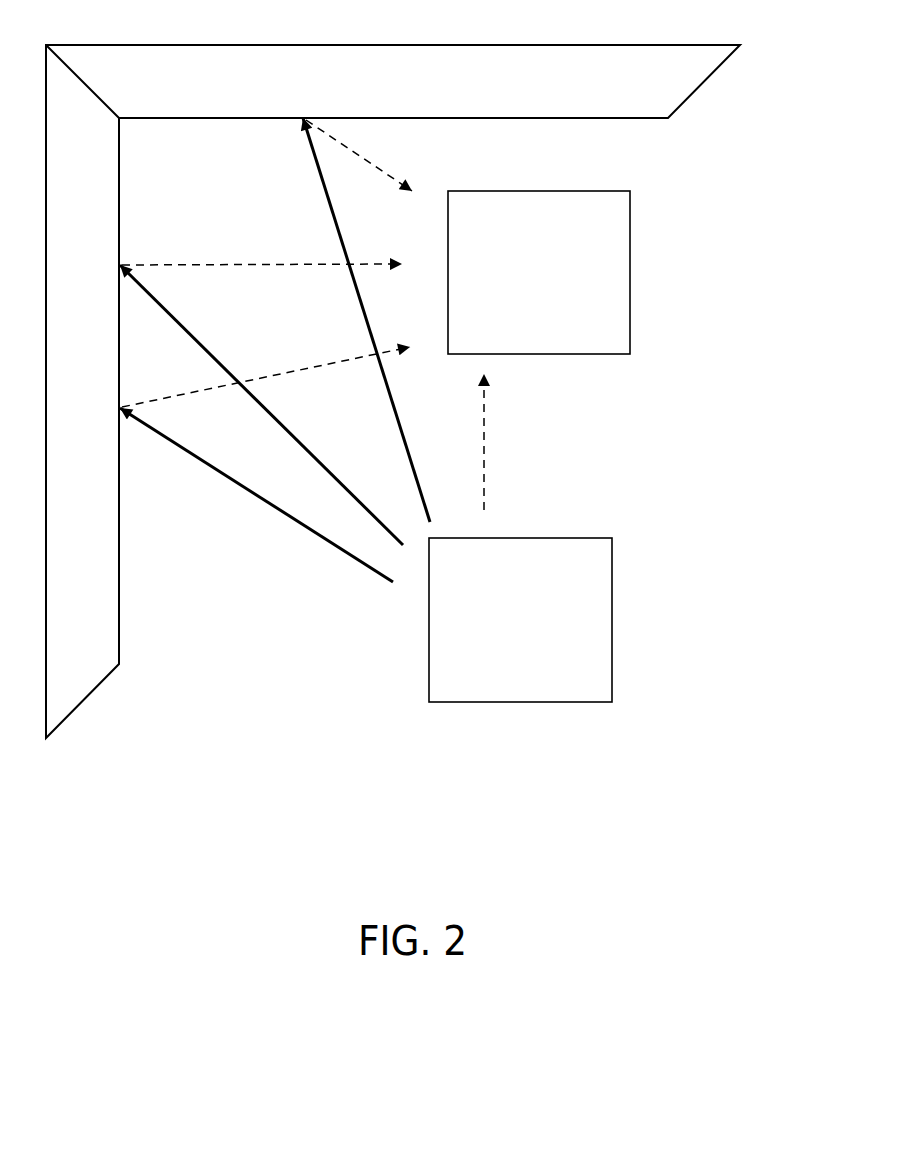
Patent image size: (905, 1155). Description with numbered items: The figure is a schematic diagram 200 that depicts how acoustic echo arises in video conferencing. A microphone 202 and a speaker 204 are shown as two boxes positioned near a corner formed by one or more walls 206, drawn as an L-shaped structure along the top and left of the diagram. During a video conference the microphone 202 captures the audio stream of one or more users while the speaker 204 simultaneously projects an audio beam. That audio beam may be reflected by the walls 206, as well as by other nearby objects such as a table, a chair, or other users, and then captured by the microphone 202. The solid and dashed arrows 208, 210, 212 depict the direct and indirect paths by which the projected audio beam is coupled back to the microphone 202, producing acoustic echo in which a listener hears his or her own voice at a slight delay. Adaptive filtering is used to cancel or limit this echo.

The environment / system 200 is at (800, 810).
The microphone 202 is at (630, 251).
The speaker 204 is at (612, 618).
The walls 206 is at (345, 45).
The arrow 208 is at (288, 520).
The arrow 210 is at (287, 425).
The arrow 212 is at (484, 492).